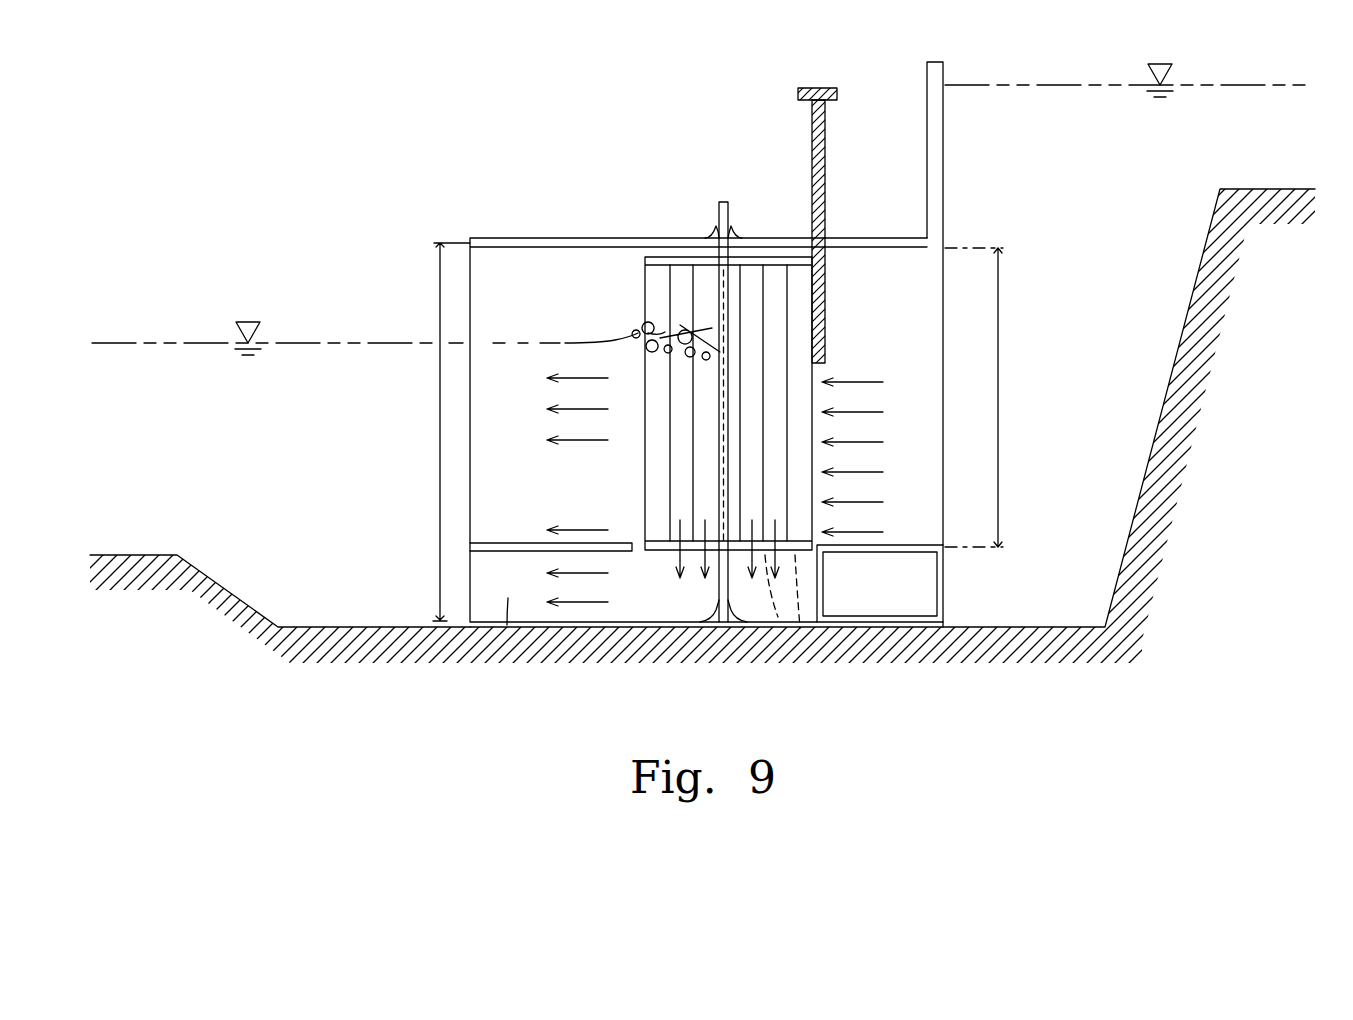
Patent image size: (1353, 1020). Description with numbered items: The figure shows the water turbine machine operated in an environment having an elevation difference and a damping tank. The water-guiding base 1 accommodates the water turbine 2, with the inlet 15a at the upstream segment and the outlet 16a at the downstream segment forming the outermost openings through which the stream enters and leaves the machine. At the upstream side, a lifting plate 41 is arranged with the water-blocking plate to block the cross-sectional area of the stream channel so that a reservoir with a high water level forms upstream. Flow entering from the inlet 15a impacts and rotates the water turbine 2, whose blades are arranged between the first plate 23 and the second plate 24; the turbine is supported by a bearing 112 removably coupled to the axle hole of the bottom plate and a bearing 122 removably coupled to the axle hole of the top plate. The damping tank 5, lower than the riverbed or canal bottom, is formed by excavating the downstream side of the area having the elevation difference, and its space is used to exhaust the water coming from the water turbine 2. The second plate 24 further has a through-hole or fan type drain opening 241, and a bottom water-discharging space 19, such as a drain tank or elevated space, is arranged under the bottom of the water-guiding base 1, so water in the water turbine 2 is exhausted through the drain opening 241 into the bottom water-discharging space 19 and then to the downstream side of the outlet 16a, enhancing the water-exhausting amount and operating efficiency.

The water-guiding base 1 is at (546, 224).
The water turbine 2 is at (708, 362).
The damping tank 5 is at (338, 606).
The bottom water-discharging space 19 is at (507, 625).
The first plate 23 is at (780, 265).
The second plate 24 is at (825, 668).
The lifting plate 41 is at (927, 200).
The bearing 112 is at (688, 625).
The bearing 122 is at (718, 238).
The drain opening 241 is at (790, 650).
The inlet 15a is at (999, 397).
The outlet 16a is at (431, 432).